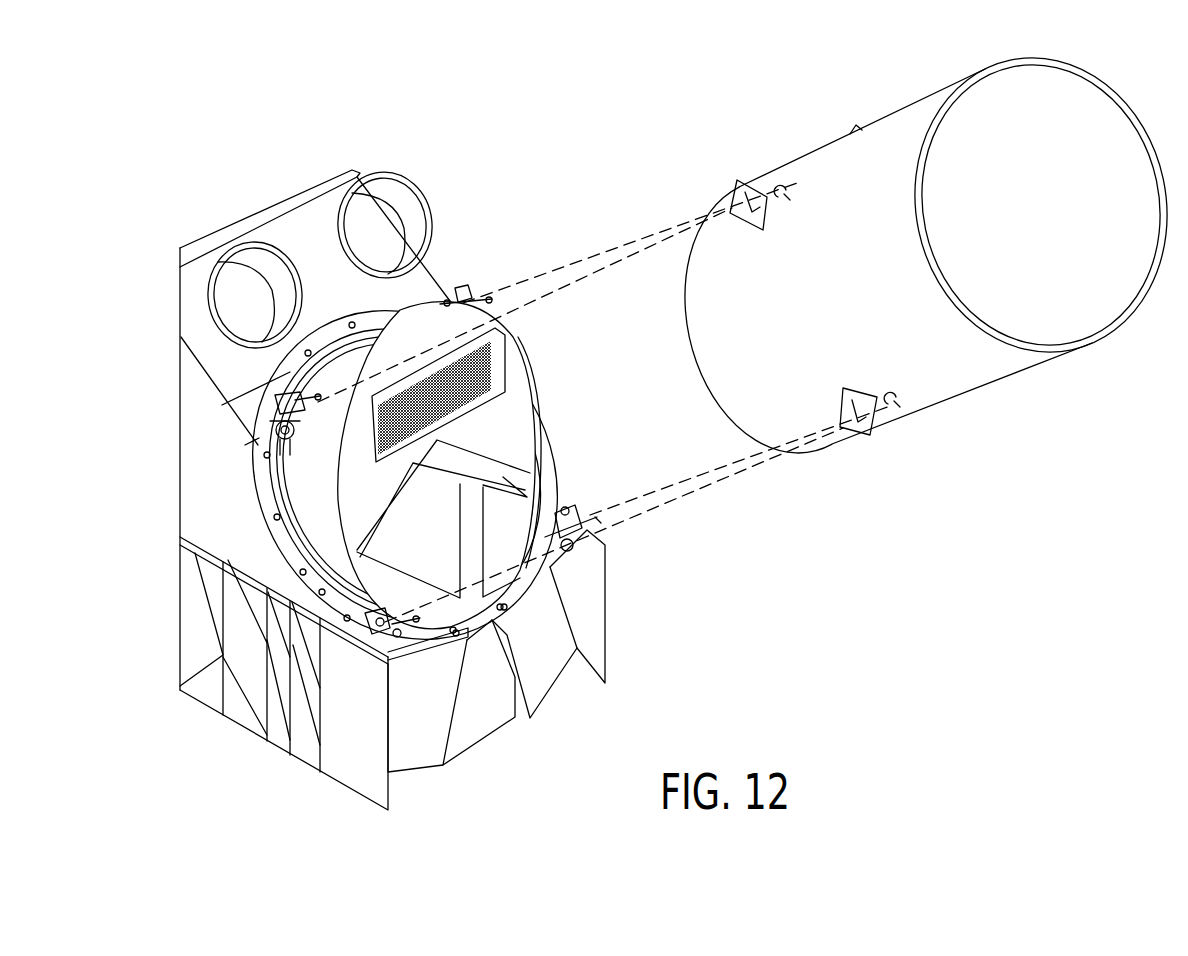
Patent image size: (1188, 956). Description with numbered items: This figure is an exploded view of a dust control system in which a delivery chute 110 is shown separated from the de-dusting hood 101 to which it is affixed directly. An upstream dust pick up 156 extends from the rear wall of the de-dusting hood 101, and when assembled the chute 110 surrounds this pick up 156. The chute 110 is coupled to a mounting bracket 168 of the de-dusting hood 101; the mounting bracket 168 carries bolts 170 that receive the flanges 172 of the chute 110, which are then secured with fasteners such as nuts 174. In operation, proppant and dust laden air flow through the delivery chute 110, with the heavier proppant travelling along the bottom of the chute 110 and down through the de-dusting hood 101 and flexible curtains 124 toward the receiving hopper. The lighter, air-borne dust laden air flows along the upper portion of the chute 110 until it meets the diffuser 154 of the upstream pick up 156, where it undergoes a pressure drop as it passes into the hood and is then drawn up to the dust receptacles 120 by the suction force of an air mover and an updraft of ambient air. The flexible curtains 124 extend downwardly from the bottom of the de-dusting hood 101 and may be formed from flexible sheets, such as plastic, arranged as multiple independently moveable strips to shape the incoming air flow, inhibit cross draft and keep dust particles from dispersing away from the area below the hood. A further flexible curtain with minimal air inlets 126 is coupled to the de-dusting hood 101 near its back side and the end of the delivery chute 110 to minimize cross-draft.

The de-dusting hood 101 is at (205, 442).
The delivery chute 110 is at (1015, 370).
The dust receptacle 120 is at (415, 220).
The flexible curtain 124 is at (308, 747).
The flexible curtain with minimal air inlets 126 is at (483, 723).
The diffuser 154 is at (497, 389).
The upstream dust pick up 156 is at (463, 303).
The mounting bracket 168 is at (303, 550).
The bolts 170 is at (597, 517).
The flanges 172 is at (740, 182).
The nuts 174 is at (780, 185).